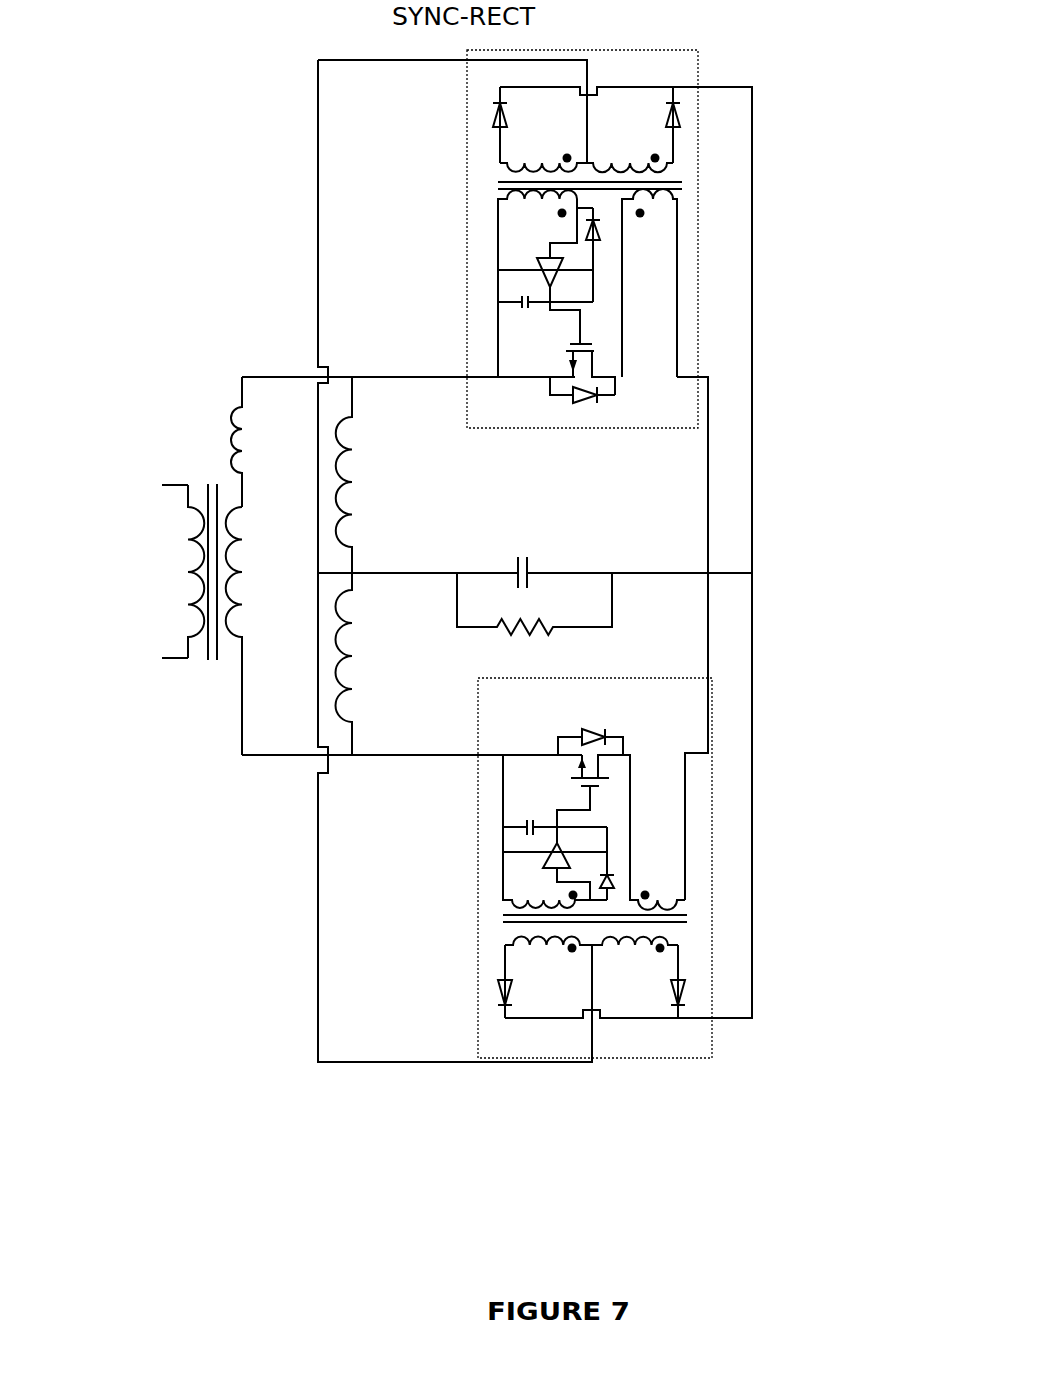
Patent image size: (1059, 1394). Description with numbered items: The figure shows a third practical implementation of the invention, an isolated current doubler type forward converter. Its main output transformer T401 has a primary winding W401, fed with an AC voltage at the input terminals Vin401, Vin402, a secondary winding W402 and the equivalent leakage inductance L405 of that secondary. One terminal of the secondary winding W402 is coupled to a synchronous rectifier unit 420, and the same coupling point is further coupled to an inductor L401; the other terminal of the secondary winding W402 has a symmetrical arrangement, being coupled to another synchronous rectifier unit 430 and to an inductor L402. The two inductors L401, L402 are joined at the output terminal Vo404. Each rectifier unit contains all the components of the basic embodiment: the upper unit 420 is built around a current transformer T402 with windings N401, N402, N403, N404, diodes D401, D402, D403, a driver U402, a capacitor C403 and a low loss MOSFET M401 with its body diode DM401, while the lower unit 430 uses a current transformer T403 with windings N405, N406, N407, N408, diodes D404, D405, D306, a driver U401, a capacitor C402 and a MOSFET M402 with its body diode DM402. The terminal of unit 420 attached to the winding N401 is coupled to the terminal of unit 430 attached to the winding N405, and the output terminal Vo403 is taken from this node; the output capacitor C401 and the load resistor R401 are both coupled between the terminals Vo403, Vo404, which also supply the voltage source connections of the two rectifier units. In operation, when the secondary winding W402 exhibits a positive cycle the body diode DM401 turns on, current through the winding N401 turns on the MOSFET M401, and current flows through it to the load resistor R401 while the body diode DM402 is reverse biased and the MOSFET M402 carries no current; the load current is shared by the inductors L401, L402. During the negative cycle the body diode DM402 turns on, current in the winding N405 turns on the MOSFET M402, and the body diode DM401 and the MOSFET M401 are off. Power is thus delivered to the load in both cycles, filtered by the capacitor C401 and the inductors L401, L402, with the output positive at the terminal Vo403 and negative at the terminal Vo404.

The synchronous rectifier unit 420 is at (444, 215).
The synchronous rectifier unit 430 is at (734, 786).
The transformer T401 is at (198, 471).
The current transformer T402 is at (476, 188).
The current transformer T403 is at (481, 929).
The diode D401 is at (688, 120).
The diode D402 is at (490, 118).
The diode D403 is at (596, 248).
The diode D404 is at (688, 1002).
The diode D405 is at (493, 987).
The diode D306 is at (618, 867).
The winding N401 is at (658, 210).
The winding N402 is at (533, 212).
The winding N403 is at (615, 160).
The winding N404 is at (547, 155).
The winding N405 is at (655, 892).
The winding N406 is at (547, 883).
The winding N407 is at (622, 943).
The winding N408 is at (555, 955).
The driver U401 is at (542, 845).
The driver U402 is at (537, 278).
The output capacitor C401 is at (547, 537).
The capacitor C402 is at (515, 808).
The capacitor C403 is at (520, 315).
The MOSFET M401 is at (565, 357).
The MOSFET M402 is at (573, 778).
The body diode DM401 is at (580, 410).
The body diode DM402 is at (613, 705).
The inductor L401 is at (350, 498).
The inductor L402 is at (350, 638).
The leakage inductance L405 is at (240, 422).
The primary winding W401 is at (188, 580).
The secondary winding W402 is at (248, 580).
The load resistor R401 is at (510, 638).
The input terminal Vin401 is at (162, 475).
The input terminal Vin402 is at (142, 663).
The output terminal Vo403 is at (667, 553).
The output terminal Vo404 is at (415, 582).